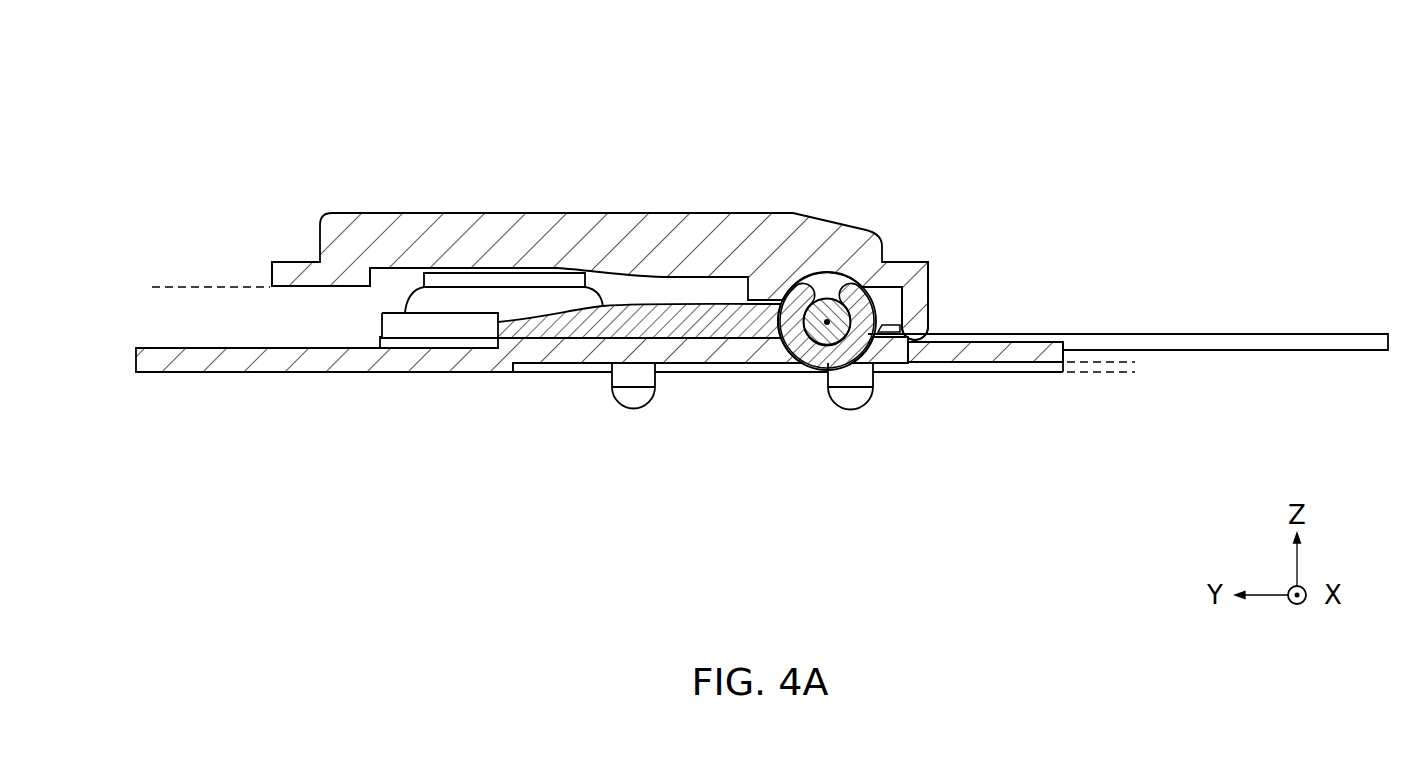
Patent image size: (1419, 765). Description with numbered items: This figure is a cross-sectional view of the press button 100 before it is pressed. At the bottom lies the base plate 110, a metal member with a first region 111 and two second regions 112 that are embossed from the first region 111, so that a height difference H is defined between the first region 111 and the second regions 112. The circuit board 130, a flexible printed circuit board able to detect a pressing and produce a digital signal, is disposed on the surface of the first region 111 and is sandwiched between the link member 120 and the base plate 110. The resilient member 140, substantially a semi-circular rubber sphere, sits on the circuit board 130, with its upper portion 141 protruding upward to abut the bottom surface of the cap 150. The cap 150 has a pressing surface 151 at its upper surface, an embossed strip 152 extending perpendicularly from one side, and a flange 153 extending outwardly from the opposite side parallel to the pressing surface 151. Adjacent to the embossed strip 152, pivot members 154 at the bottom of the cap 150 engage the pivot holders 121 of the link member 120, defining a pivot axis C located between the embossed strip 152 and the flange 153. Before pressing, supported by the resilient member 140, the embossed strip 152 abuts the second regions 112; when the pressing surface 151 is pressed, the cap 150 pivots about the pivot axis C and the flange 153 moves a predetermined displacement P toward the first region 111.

The press button 100 is at (168, 78).
The base plate 110 is at (268, 376).
The first region 111 is at (485, 365).
The second regions 112 is at (597, 355).
The link member 120 is at (713, 338).
The pivot holders 121 is at (868, 352).
The circuit board 130 is at (1230, 352).
The resilient member 140 is at (431, 332).
The upper portion 141 is at (487, 297).
The cap 150 is at (724, 200).
The pressing surface 151 is at (568, 212).
The embossed strip 152 is at (917, 304).
The flange 153 is at (285, 270).
The pivot members 154 is at (810, 352).
The pivot axis C is at (827, 320).
The predetermined displacement P is at (188, 287).
The height difference H is at (1127, 313).